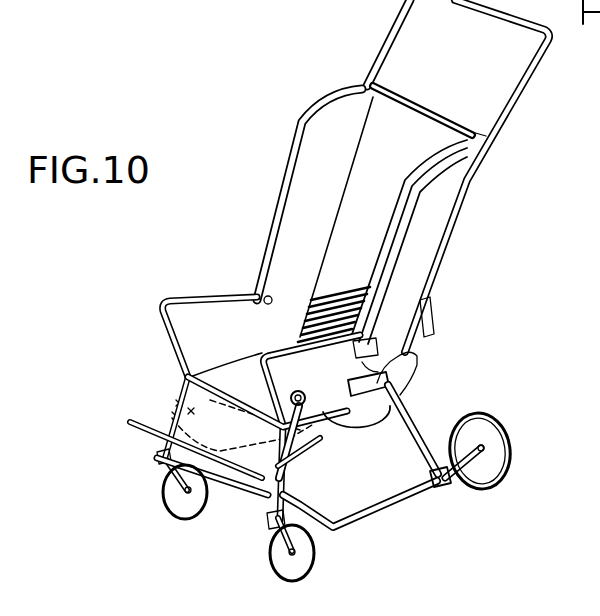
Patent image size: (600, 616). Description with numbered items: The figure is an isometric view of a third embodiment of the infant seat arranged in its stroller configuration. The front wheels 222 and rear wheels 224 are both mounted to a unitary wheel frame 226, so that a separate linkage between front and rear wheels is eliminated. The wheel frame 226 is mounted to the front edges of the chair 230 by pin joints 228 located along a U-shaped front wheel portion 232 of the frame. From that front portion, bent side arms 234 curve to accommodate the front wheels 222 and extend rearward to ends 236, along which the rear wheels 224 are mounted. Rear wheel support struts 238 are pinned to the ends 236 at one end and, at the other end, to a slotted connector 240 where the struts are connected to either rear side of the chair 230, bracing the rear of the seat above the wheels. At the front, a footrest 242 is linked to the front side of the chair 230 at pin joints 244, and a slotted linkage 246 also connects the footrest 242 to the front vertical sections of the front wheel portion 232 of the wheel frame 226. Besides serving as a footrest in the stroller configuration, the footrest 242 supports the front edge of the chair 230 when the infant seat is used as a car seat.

The front wheels 222 is at (267, 555).
The rear wheels 224 is at (497, 415).
The unitary wheel frame 226 is at (356, 526).
The pin joints 228 is at (323, 385).
The chair 230 is at (187, 378).
The U-shaped front wheel portion 232 is at (264, 500).
The bent side arms 234 is at (383, 505).
The ends 236 is at (443, 484).
The rear wheel support struts 238 is at (408, 418).
The slotted connector 240 is at (410, 358).
The footrest 242 is at (153, 423).
The pin joints 244 is at (313, 433).
The slotted linkage 246 is at (313, 461).